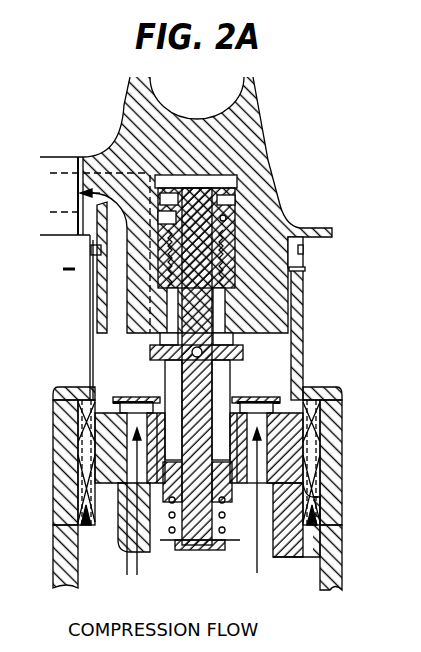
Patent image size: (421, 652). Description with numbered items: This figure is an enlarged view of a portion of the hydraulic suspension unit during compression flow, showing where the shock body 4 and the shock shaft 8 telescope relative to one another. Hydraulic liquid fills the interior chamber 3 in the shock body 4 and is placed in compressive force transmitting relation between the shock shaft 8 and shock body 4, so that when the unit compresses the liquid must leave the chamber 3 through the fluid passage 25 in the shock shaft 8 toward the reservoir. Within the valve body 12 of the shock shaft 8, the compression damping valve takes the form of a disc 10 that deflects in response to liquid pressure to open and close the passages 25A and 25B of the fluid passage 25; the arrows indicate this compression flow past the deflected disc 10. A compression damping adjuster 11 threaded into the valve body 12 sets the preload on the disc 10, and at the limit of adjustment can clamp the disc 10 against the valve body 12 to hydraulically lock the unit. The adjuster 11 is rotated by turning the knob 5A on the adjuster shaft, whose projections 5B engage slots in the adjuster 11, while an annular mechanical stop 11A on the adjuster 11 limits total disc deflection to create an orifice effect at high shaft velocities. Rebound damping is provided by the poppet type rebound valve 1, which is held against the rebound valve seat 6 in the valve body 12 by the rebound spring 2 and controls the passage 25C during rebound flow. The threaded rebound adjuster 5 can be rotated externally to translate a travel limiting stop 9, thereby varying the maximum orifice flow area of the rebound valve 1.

The rebound valve 1 is at (290, 530).
The rebound spring 2 is at (318, 572).
The interior chamber 3 is at (168, 480).
The shock body 4 is at (342, 460).
The threaded rebound adjuster 5 is at (240, 218).
The knob 5A is at (215, 175).
The projections 5B is at (250, 352).
The rebound valve seat 6 is at (240, 492).
The shock shaft 8 is at (306, 290).
The travel limiting stop 9 is at (228, 545).
The disc 10 is at (292, 392).
The compression damping adjuster 11 is at (240, 370).
The annular mechanical stop 11A is at (135, 385).
The valve body 12 is at (315, 415).
The fluid passage 25 is at (62, 187).
The passage 25A is at (118, 400).
The passage 25B is at (322, 432).
The passage 25C is at (150, 585).